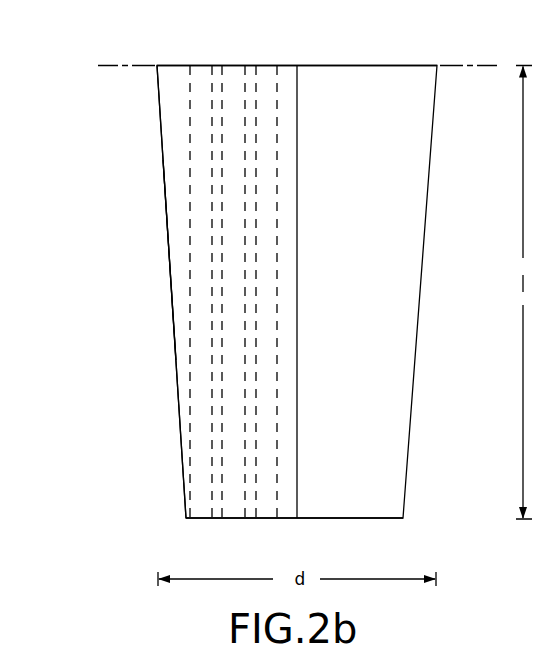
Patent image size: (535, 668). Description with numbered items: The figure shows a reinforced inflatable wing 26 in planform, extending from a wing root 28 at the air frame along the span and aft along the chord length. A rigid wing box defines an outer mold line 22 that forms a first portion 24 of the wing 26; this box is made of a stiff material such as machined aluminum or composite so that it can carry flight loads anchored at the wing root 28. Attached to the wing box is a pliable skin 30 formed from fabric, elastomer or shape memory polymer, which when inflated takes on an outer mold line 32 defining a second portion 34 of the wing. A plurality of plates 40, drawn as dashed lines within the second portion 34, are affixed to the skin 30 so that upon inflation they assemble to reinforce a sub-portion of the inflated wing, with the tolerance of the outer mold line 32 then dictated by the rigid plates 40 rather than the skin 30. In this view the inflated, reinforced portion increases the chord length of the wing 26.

The outer mold line 22 is at (429, 180).
The first portion 24 is at (403, 529).
The wing 26 is at (150, 146).
The wing root 28 is at (148, 64).
The skin 30 is at (206, 346).
The outer mold line 32 is at (170, 252).
The second portion 34 is at (297, 529).
The plates 40 is at (267, 73).